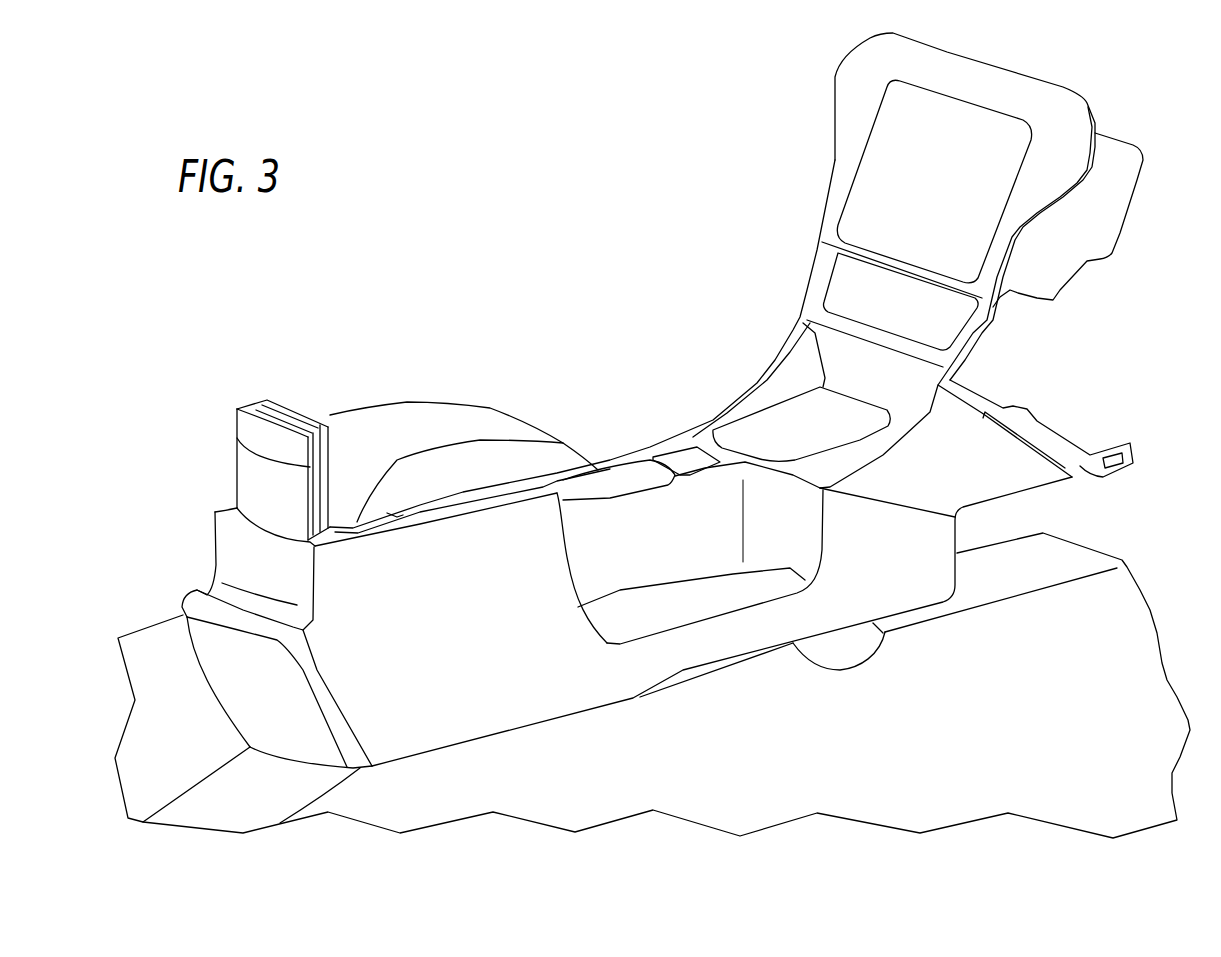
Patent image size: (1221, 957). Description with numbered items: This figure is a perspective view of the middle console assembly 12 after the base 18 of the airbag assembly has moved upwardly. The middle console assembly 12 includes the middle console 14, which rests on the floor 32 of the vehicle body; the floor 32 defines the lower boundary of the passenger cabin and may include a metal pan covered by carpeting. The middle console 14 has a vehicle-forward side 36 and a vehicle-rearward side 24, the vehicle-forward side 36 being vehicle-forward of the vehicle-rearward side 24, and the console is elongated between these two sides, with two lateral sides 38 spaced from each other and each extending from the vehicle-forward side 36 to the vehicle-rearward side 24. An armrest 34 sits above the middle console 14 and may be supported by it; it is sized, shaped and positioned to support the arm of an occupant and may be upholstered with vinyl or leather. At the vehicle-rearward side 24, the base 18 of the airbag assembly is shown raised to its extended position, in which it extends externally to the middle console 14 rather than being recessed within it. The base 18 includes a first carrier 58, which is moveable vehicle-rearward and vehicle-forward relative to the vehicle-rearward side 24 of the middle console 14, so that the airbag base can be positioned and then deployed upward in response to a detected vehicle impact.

The middle console assembly 12 is at (492, 296).
The middle console 14 is at (417, 713).
The base 18 is at (270, 460).
The vehicle-rearward side 24 is at (242, 557).
The floor 32 is at (277, 797).
The armrest 34 is at (408, 420).
The vehicle-forward side 36 is at (572, 567).
The lateral sides 38 is at (476, 614).
The first carrier 58 is at (273, 490).